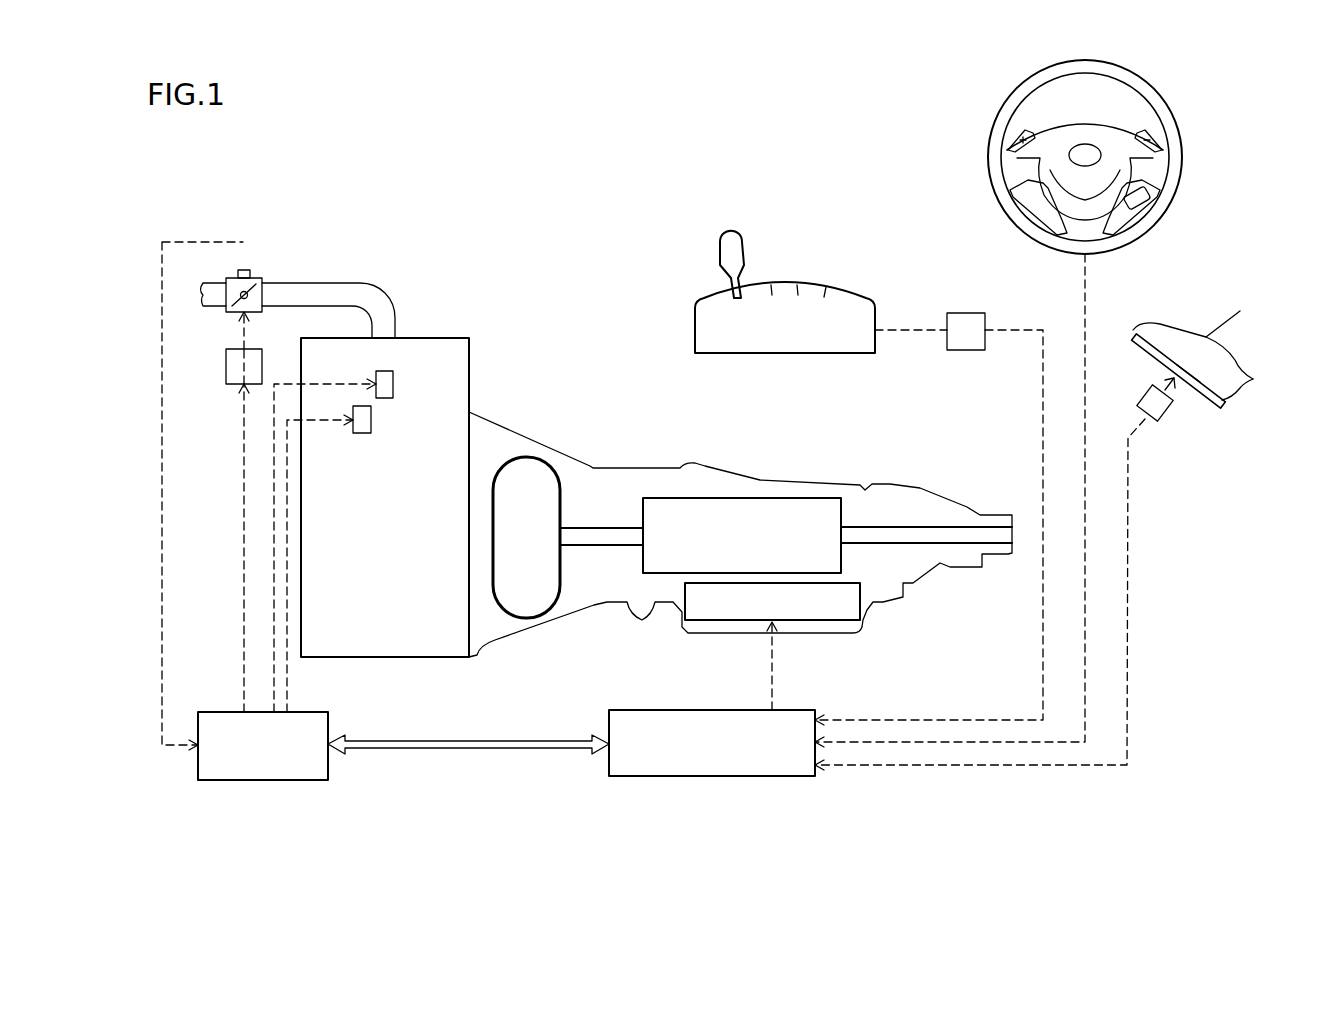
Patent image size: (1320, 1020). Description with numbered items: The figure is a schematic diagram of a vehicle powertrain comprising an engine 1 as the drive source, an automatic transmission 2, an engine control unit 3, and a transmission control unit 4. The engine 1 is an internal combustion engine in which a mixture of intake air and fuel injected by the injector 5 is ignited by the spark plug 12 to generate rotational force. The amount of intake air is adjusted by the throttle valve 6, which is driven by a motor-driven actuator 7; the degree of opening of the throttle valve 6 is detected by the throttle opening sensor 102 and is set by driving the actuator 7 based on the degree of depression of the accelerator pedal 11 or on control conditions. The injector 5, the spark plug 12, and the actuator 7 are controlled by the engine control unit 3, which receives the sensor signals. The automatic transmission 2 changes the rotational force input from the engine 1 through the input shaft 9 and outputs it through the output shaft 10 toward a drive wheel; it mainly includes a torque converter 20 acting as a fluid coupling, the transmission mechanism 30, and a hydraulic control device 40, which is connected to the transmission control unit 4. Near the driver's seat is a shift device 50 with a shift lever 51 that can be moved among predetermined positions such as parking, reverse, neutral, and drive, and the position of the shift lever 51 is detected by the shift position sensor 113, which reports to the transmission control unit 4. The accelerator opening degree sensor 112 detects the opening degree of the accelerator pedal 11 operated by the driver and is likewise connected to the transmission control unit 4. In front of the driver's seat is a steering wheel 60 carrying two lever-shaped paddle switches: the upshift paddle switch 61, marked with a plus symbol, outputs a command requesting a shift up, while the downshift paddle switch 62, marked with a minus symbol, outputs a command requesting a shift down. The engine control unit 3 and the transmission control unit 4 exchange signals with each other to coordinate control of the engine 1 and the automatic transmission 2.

The engine 1 is at (450, 338).
The automatic transmission 2 is at (690, 458).
The engine control unit 3 is at (255, 780).
The transmission control unit 4 is at (660, 777).
The injector 5 is at (385, 398).
The throttle valve 6 is at (269, 276).
The actuator 7 is at (226, 370).
The input shaft 9 is at (600, 535).
The output shaft 10 is at (990, 530).
The accelerator pedal 11 is at (1200, 400).
The spark plug 12 is at (362, 433).
The torque converter 20 is at (530, 468).
The transmission mechanism 30 is at (805, 508).
The hydraulic control device 40 is at (800, 620).
The shift device 50 is at (787, 273).
The shift lever 51 is at (732, 245).
The steering wheel 60 is at (1180, 187).
The upshift paddle switch 61 is at (1020, 130).
The downshift paddle switch 62 is at (1148, 128).
The throttle opening sensor 102 is at (246, 270).
The accelerator opening degree sensor 112 is at (1140, 393).
The shift position sensor 113 is at (960, 313).